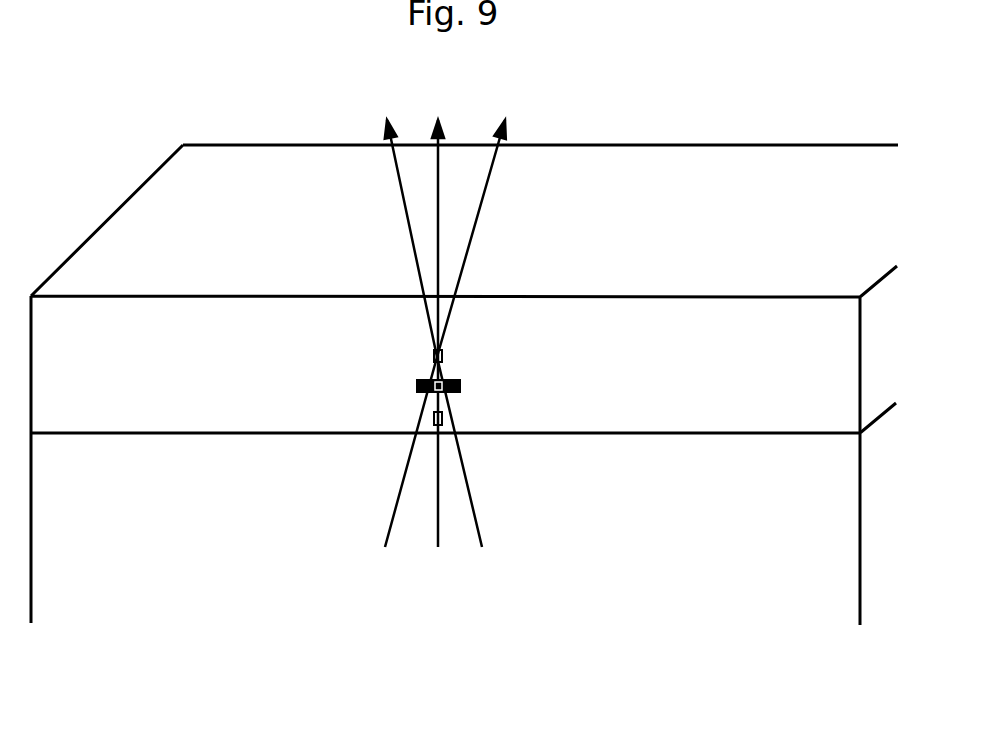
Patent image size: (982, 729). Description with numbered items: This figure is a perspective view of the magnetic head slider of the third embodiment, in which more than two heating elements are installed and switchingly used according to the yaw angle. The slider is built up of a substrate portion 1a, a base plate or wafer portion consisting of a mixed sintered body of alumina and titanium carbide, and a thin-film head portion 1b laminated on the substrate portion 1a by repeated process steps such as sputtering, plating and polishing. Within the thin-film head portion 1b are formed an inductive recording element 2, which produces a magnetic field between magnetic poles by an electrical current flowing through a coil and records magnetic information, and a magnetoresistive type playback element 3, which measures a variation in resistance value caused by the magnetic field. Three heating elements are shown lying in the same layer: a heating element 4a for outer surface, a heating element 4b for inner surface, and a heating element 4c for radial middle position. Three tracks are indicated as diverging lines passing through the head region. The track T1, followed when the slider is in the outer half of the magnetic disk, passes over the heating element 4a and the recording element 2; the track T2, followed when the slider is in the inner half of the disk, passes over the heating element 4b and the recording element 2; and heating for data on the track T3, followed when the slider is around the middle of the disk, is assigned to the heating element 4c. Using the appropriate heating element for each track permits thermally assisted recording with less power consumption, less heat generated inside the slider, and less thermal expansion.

The substrate portion 1a is at (122, 485).
The thin-film head portion 1b is at (121, 388).
The recording element 2 is at (442, 357).
The playback element 3 is at (434, 426).
The heating element for outer surface 4a is at (417, 387).
The heating element for inner surface 4b is at (460, 388).
The heating element for radial middle position 4c is at (448, 392).
The track T1 is at (471, 355).
The track T2 is at (401, 355).
The track T3 is at (437, 355).